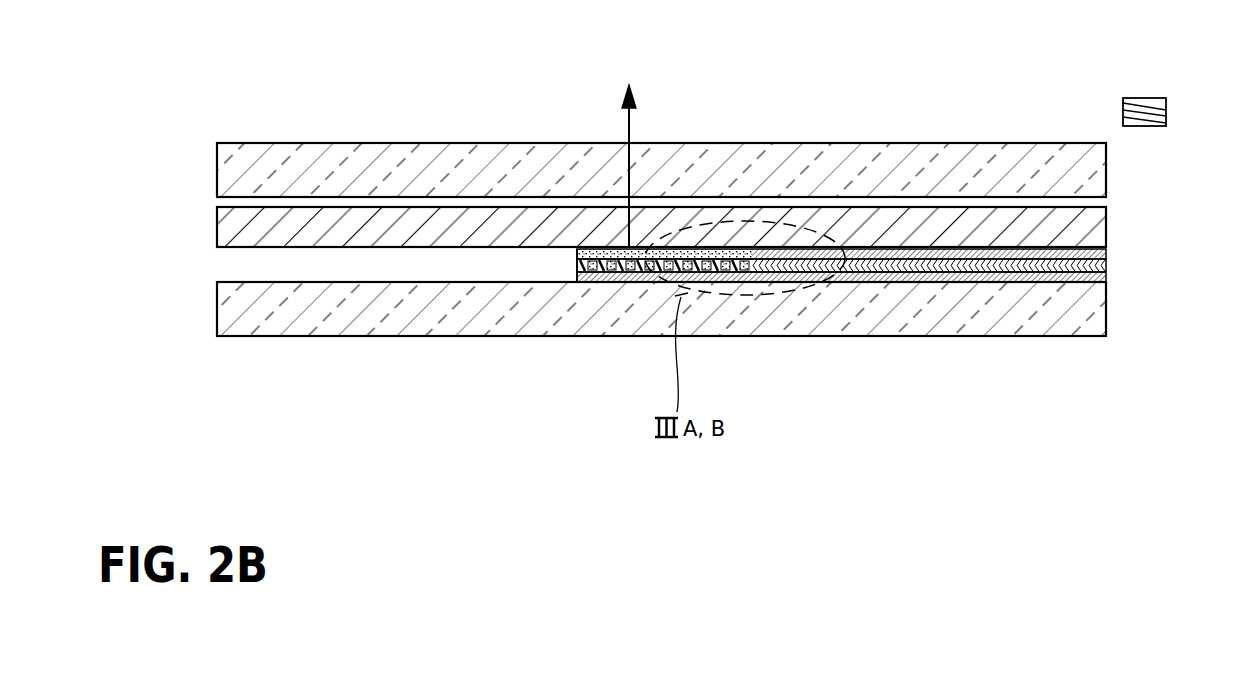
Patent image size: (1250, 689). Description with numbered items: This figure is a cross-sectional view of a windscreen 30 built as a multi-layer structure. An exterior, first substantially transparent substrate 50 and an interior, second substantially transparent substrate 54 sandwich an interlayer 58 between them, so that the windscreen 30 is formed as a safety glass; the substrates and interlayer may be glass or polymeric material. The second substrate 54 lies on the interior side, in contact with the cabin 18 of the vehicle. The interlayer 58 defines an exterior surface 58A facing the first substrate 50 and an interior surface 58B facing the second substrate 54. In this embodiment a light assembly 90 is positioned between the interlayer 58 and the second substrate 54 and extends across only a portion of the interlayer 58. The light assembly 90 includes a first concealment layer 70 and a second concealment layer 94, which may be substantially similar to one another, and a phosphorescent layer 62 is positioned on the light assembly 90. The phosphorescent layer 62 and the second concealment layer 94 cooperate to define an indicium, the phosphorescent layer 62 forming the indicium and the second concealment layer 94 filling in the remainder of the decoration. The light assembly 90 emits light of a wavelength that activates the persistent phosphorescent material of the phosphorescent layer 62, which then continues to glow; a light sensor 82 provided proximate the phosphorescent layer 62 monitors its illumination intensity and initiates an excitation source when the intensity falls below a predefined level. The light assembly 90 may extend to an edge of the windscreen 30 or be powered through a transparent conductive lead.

The cabin 18 is at (880, 397).
The windscreen 30 is at (938, 75).
The first substantially transparent substrate 50 is at (233, 168).
The second substantially transparent substrate 54 is at (243, 297).
The interlayer 58 is at (240, 224).
The exterior surface 58A is at (330, 207).
The interior surface 58B is at (352, 248).
The phosphorescent layer 62 is at (577, 249).
The first concealment layer 70 is at (1106, 279).
The light sensor 82 is at (1166, 110).
The light assembly 90 is at (1106, 266).
The second concealment layer 94 is at (1106, 253).